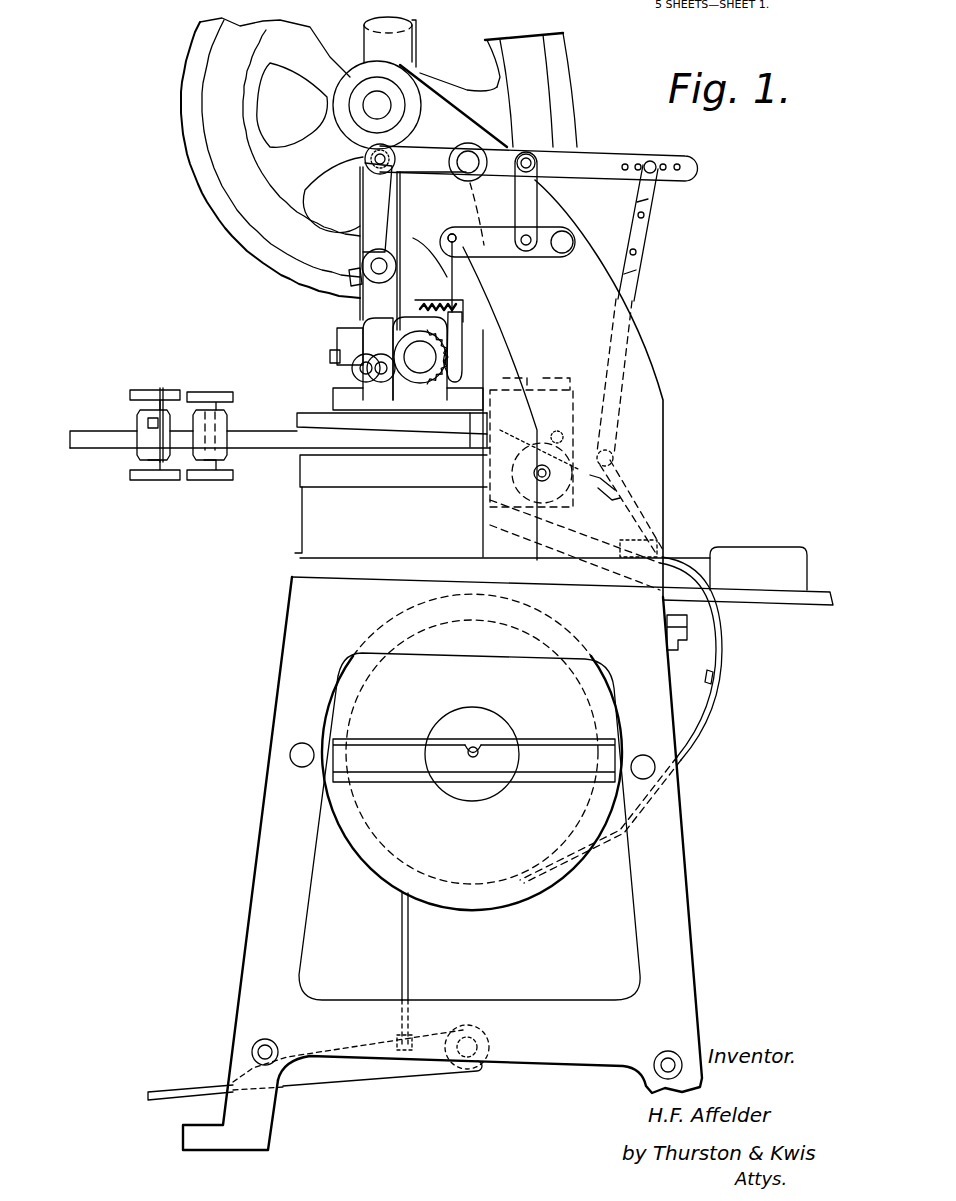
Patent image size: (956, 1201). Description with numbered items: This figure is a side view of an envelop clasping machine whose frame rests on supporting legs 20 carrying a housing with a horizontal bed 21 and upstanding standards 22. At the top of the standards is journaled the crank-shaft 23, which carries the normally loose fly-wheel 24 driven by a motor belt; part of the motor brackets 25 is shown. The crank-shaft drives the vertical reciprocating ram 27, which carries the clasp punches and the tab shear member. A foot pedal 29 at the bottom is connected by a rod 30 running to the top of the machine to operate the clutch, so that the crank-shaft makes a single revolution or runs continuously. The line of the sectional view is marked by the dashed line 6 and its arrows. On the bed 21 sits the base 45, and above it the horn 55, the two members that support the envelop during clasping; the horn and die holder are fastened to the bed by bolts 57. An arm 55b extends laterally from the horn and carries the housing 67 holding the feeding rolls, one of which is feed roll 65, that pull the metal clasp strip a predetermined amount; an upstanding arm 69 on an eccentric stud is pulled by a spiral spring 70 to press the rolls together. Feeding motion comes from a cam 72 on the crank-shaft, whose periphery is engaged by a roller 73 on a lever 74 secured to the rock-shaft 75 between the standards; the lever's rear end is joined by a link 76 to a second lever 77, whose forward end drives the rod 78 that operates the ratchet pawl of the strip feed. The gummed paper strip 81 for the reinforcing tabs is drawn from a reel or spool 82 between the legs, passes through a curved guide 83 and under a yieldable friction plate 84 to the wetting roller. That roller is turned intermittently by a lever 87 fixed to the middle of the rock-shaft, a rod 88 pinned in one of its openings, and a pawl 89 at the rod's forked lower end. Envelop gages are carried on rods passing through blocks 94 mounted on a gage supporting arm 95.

The section line 6— 6 is at (180, 170).
The supporting legs 20 is at (272, 815).
The horizontal bed 21 is at (300, 483).
The upstanding arms or standards 22 is at (645, 404).
The crank-shaft 23 is at (383, 107).
The fly-wheel 24 is at (578, 68).
The brackets 25 is at (793, 602).
The vertical reciprocating ram 27 is at (390, 230).
The foot pedal 29 is at (187, 1088).
The rod 30 is at (398, 963).
The base 45 is at (385, 457).
The horn 55 is at (300, 415).
The arm 55b is at (487, 430).
The bolts 57 is at (568, 386).
The feeding roll 65 is at (420, 358).
The housing 67 is at (373, 332).
The upstanding arm 69 is at (461, 333).
The spiral spring 70 is at (438, 308).
The cam 72 is at (347, 127).
The roller 73 is at (367, 167).
The lever 74 is at (438, 172).
The rock-shaft 75 is at (468, 166).
The link 76 is at (530, 203).
The second lever 77 is at (557, 247).
The rod 78 is at (455, 284).
The gummed paper strip 81 is at (672, 543).
The reel or spool 82 is at (502, 907).
The curved guide 83 is at (718, 705).
The yieldable friction plate 84 is at (623, 482).
The lever 87 is at (592, 150).
The rod 88 is at (656, 262).
The pawl 89 is at (548, 432).
The blocks 94 is at (197, 456).
The gage supporting arm 95 is at (113, 449).